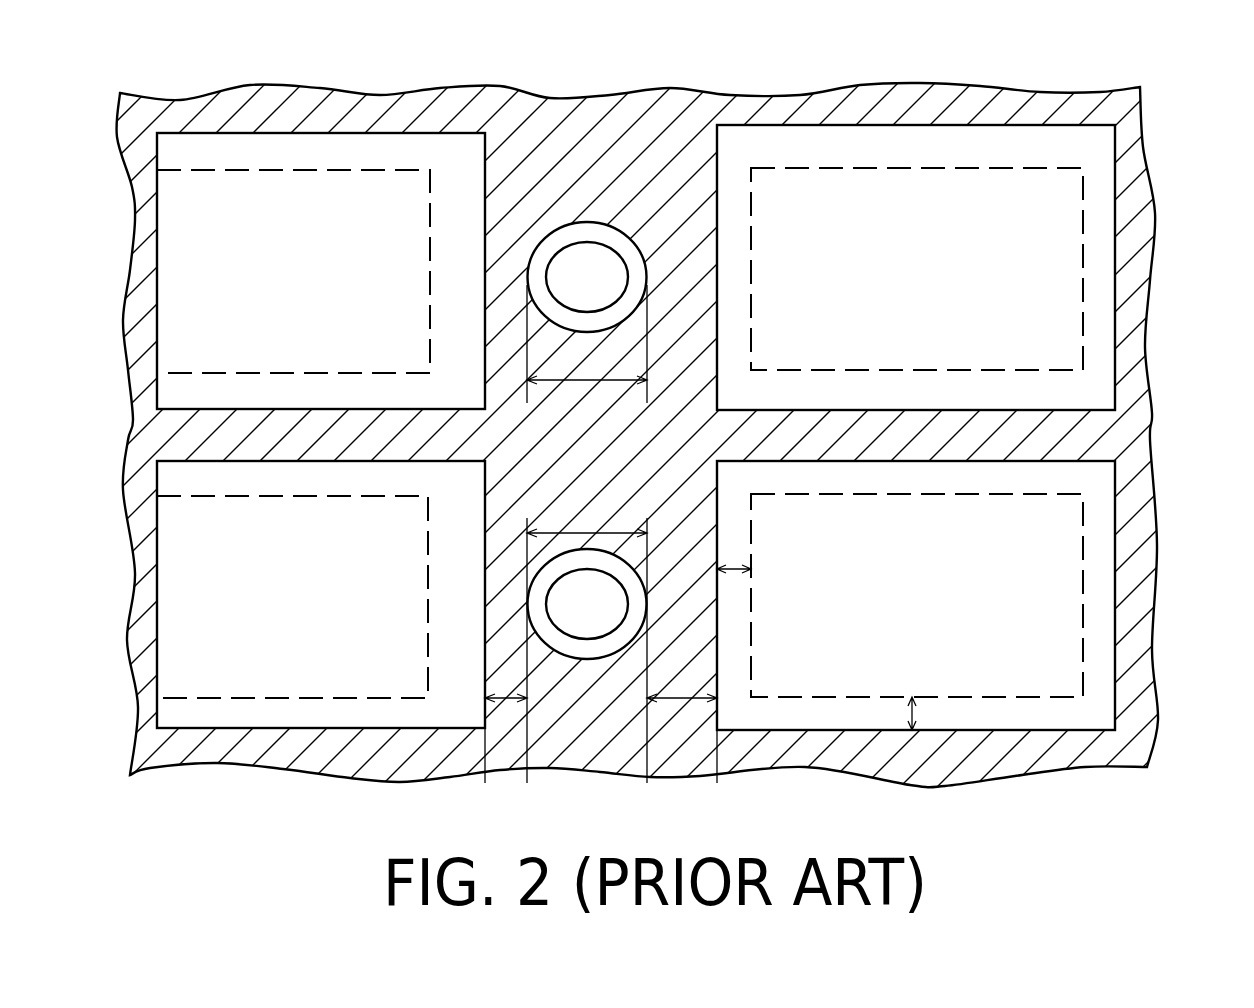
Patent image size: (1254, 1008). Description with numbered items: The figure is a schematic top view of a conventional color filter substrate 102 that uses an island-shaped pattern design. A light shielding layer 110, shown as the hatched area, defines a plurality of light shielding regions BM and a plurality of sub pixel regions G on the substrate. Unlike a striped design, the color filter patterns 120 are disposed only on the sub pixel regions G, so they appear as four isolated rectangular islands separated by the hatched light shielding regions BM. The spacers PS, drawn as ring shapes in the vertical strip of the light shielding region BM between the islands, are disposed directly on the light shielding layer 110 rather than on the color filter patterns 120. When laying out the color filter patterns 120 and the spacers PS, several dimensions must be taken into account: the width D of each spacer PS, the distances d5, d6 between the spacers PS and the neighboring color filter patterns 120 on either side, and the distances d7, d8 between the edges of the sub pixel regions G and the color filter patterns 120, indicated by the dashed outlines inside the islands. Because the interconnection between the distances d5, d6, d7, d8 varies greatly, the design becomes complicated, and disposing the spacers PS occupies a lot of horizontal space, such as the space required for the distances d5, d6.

The color filter substrate 102 is at (1240, 846).
The light shielding layer 110 is at (610, 140).
The color filter patterns 120 is at (175, 225).
The light shielding regions BM is at (667, 187).
The spacers PS is at (575, 272).
The sub pixel regions G is at (182, 313).
The width of spacer D is at (587, 534).
The distance between spacer and color filter pattern d5 is at (506, 719).
The distance between spacer and color filter pattern d6 is at (682, 719).
The distance between sub pixel region edge and color filter pattern d7 is at (734, 550).
The distance between sub pixel region edge and color filter pattern d8 is at (929, 713).